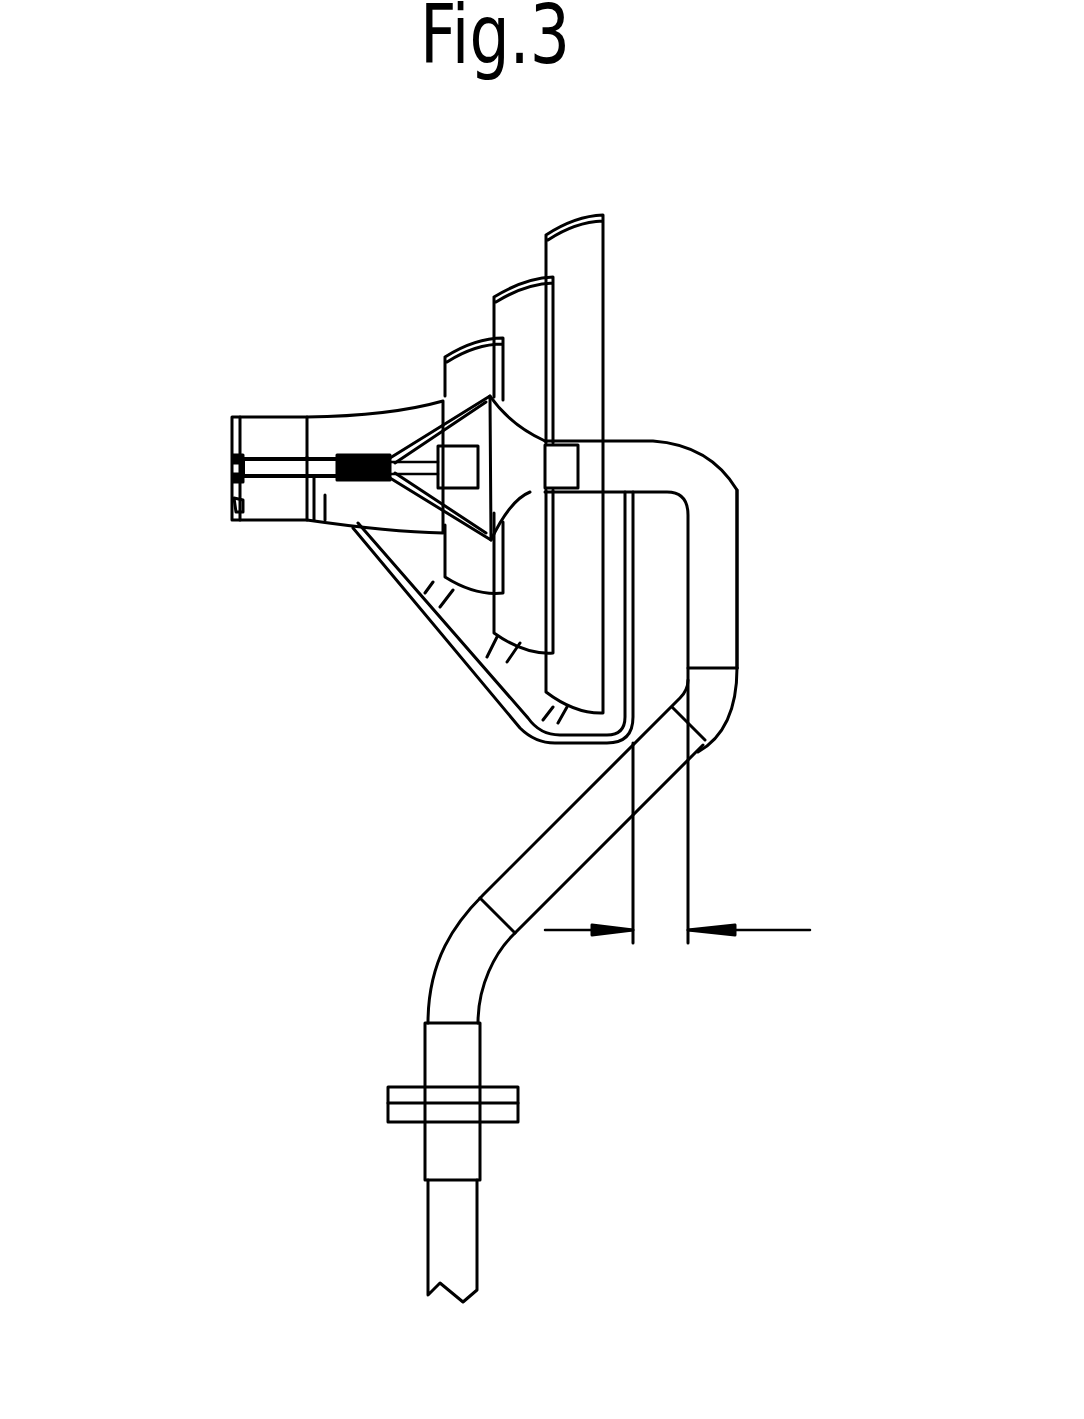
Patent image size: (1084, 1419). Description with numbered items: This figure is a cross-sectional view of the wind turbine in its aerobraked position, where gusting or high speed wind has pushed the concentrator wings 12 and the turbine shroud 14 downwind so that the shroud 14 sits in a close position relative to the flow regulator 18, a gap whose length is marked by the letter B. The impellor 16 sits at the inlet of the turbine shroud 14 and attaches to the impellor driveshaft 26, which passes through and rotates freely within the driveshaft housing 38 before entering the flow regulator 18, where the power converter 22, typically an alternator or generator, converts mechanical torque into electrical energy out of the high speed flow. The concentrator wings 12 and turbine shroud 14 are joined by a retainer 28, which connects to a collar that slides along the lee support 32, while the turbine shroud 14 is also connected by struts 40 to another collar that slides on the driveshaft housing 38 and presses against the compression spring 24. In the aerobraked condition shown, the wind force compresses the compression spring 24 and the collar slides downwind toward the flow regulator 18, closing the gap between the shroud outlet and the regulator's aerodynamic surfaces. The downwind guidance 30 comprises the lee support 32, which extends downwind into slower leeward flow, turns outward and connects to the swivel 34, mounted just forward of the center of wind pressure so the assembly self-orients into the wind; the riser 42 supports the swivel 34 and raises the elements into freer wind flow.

The concentrator wings 12 is at (427, 597).
The turbine shroud 14 is at (263, 435).
The impellor 16 is at (232, 503).
The flow regulator 18 is at (460, 467).
The power converter 22 is at (475, 428).
The compression spring 24 is at (352, 457).
The impellor driveshaft 26 is at (418, 463).
The retainer 28 is at (497, 680).
The downwind guidance 30 is at (794, 801).
The lee support 32 is at (725, 555).
The swivel 34 is at (508, 1100).
The driveshaft housing 38 is at (273, 482).
The struts 40 is at (325, 500).
The riser 42 is at (442, 1213).
The close position length B is at (701, 928).